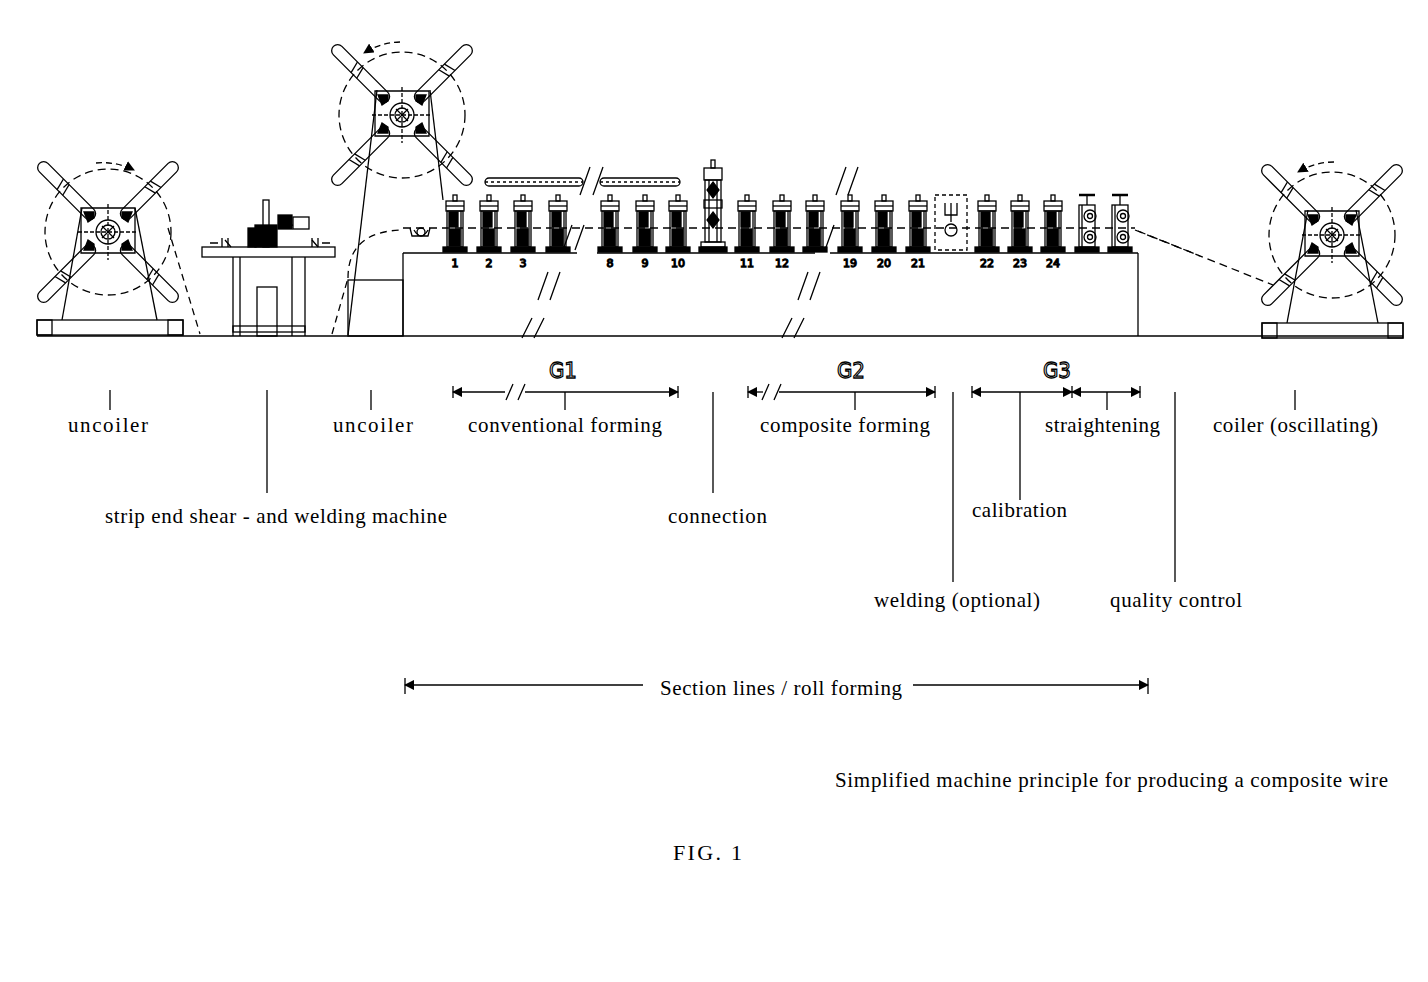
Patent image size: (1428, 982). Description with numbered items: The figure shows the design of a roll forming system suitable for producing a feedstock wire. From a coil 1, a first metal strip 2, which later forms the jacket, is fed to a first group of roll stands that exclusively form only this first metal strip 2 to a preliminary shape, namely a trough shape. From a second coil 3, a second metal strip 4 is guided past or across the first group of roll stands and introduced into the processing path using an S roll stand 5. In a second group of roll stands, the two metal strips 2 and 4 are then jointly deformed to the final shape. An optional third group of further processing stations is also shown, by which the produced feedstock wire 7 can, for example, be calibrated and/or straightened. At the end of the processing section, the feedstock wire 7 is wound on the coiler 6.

The coil 1 is at (155, 219).
The first metal strip 2 is at (198, 302).
The coil 3 is at (451, 101).
The second metal strip 4 is at (478, 170).
The S roll stand 5 is at (713, 152).
The coiler 6 is at (1350, 170).
The feedstock wire 7 is at (1196, 248).